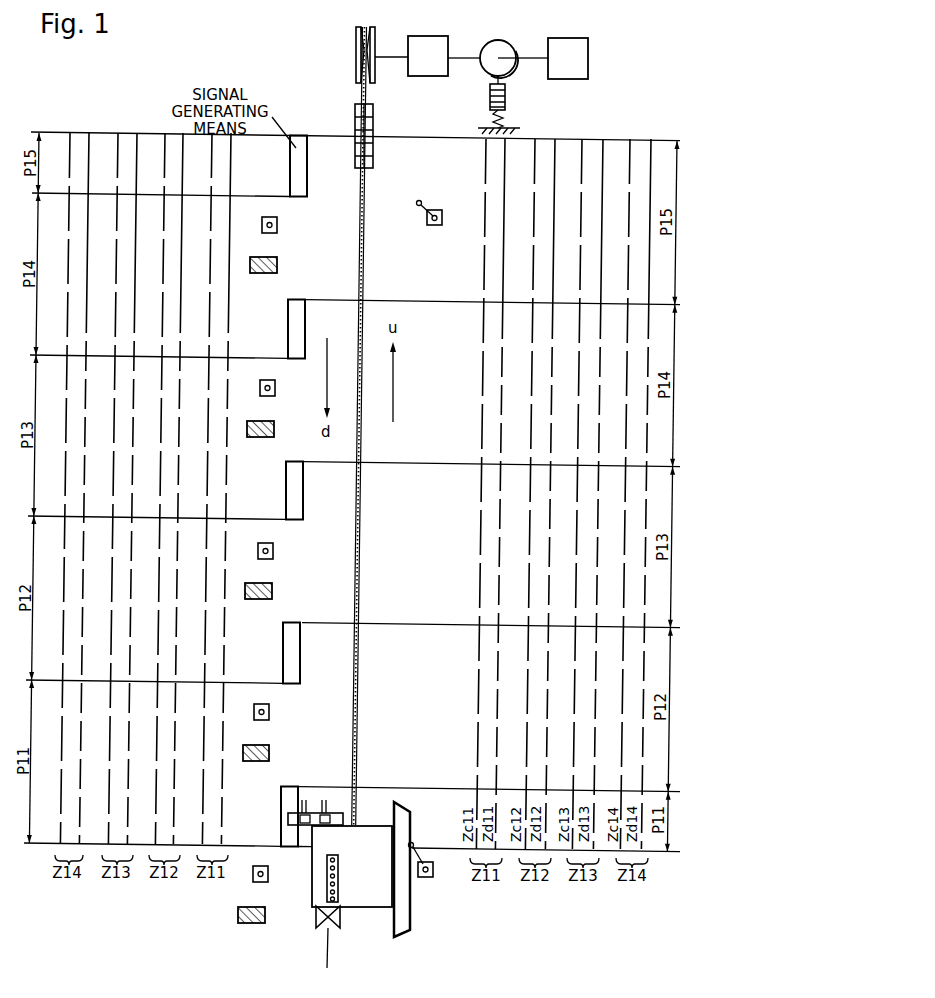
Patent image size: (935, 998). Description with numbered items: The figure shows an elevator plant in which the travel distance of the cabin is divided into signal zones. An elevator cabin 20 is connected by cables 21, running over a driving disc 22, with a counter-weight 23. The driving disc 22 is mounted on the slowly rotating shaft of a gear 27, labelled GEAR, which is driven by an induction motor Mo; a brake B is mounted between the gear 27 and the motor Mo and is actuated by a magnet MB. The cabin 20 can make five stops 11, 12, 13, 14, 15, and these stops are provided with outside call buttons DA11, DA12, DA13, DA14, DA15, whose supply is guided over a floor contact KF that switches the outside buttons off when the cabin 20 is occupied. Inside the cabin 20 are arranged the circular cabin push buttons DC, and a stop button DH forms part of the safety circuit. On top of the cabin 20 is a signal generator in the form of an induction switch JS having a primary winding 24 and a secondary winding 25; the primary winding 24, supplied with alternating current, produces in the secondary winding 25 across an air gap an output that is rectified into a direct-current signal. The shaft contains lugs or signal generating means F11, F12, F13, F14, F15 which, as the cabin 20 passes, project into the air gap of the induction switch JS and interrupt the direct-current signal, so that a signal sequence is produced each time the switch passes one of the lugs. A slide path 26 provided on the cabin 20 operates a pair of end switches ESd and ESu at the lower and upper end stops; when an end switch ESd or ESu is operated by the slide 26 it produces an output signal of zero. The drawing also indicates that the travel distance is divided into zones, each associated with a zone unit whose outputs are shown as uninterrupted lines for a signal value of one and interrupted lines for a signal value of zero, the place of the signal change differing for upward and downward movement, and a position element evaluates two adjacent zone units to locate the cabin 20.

The stop 11 is at (265, 916).
The stop 12 is at (269, 754).
The stop 13 is at (272, 592).
The stop 14 is at (274, 430).
The stop 15 is at (277, 266).
The elevator cabin 20 is at (375, 907).
The cables 21 is at (359, 558).
The driving disc 22 is at (357, 60).
The counter-weight 23 is at (356, 126).
The primary winding 24 is at (305, 811).
The secondary winding 25 is at (327, 811).
The slide path 26 is at (410, 915).
The gear 27 is at (437, 67).
The signal generating means F11 is at (281, 821).
The signal generating means F12 is at (300, 678).
The signal generating means F13 is at (303, 518).
The signal generating means F14 is at (305, 341).
The signal generating means F15 is at (307, 178).
The outside call button DA11 is at (268, 874).
The outside call button DA12 is at (269, 712).
The outside call button DA13 is at (273, 551).
The outside call button DA14 is at (275, 388).
The outside call button DA15 is at (277, 225).
The upper end switch ESu is at (435, 225).
The lower end switch ESd is at (427, 870).
The induction switch JS is at (352, 866).
The stop button DH is at (338, 861).
The cabin push buttons DC is at (338, 880).
The floor contact KF is at (337, 928).
The magnet MB is at (507, 97).
The induction motor Mo is at (578, 69).
The brake B is at (499, 48).
The gear GEAR is at (428, 37).